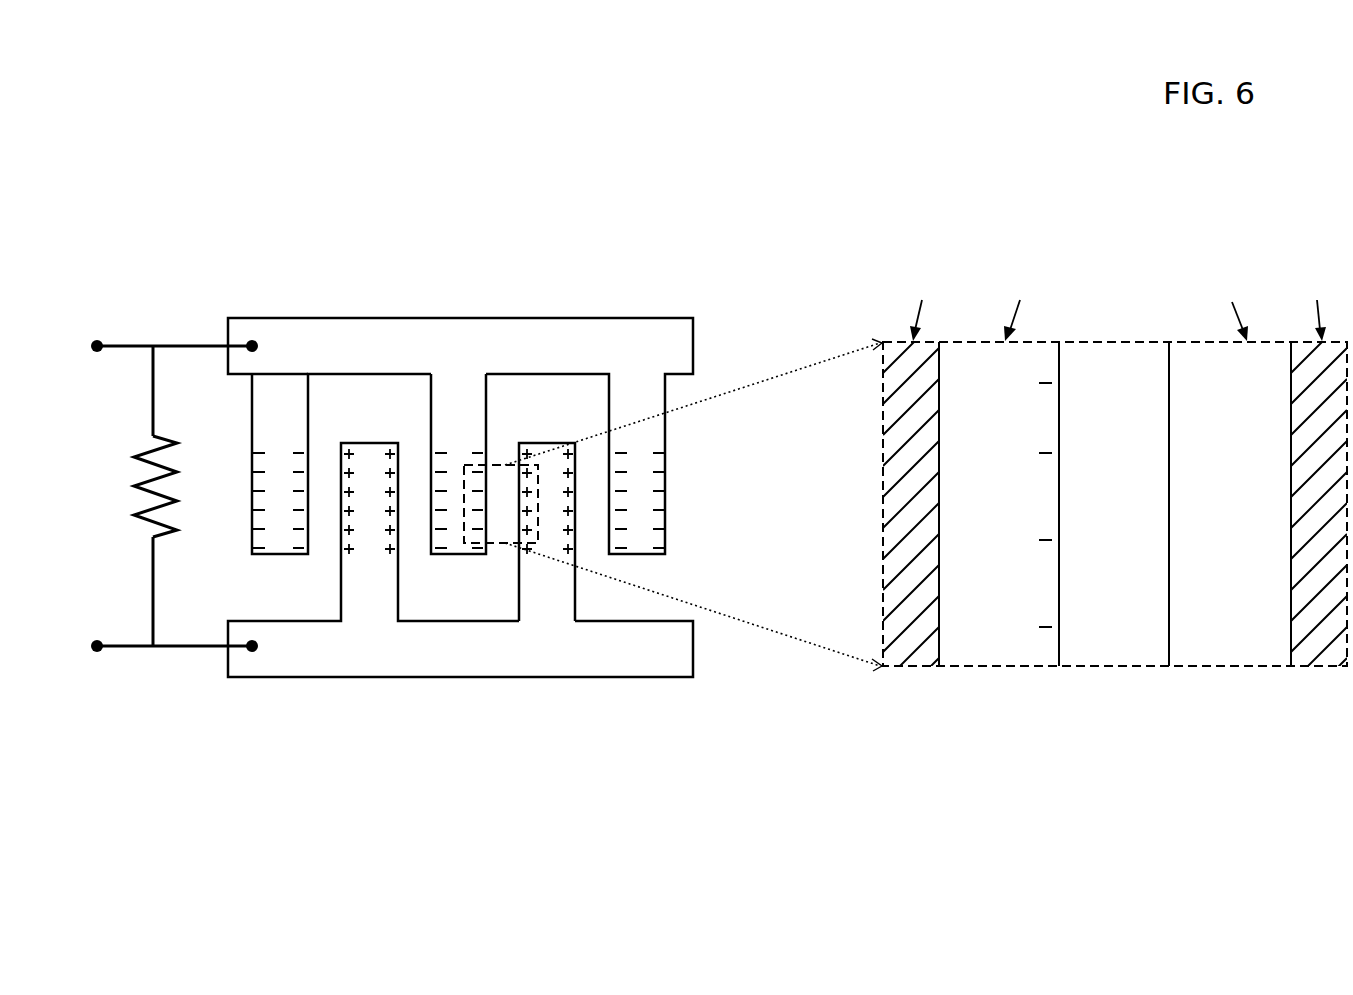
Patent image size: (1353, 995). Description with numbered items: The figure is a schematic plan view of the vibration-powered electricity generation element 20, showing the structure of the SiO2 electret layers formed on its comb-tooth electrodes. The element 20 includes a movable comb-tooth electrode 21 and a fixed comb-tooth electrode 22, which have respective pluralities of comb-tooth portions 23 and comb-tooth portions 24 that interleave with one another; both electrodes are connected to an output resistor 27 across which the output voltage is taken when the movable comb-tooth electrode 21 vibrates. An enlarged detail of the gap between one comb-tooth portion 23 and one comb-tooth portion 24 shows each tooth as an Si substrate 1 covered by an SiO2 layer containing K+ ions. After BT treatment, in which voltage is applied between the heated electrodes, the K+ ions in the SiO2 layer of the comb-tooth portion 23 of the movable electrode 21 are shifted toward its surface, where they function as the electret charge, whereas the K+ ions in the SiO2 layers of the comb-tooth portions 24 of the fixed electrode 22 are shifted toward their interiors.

The vibration-powered electricity generation element 20 is at (498, 472).
The movable comb-tooth electrode 21 is at (452, 667).
The fixed comb-tooth electrode 22 is at (337, 318).
The comb-tooth portions 23 is at (547, 588).
The comb-tooth portions 24 is at (462, 397).
The output resistor 27 is at (134, 479).
The Si substrate 1 is at (1118, 493).